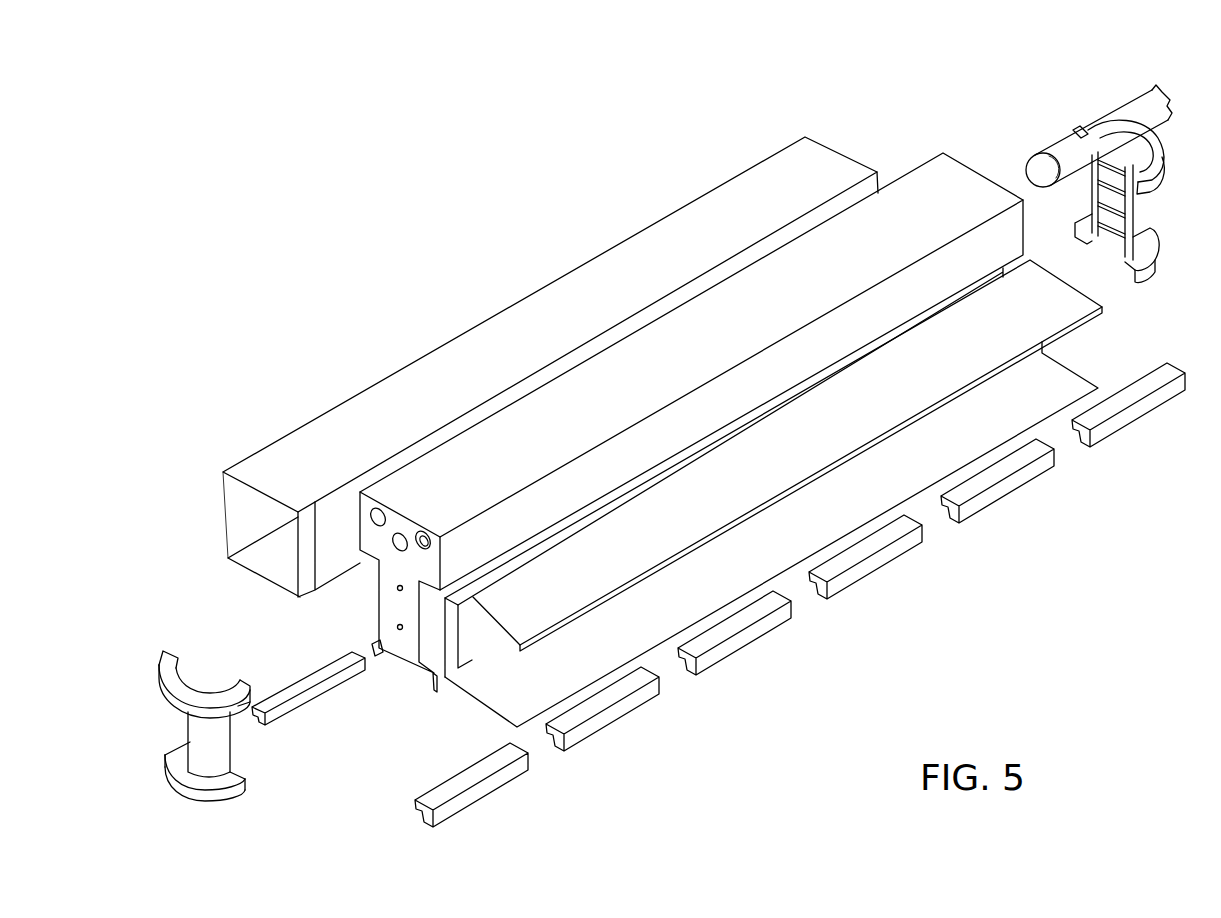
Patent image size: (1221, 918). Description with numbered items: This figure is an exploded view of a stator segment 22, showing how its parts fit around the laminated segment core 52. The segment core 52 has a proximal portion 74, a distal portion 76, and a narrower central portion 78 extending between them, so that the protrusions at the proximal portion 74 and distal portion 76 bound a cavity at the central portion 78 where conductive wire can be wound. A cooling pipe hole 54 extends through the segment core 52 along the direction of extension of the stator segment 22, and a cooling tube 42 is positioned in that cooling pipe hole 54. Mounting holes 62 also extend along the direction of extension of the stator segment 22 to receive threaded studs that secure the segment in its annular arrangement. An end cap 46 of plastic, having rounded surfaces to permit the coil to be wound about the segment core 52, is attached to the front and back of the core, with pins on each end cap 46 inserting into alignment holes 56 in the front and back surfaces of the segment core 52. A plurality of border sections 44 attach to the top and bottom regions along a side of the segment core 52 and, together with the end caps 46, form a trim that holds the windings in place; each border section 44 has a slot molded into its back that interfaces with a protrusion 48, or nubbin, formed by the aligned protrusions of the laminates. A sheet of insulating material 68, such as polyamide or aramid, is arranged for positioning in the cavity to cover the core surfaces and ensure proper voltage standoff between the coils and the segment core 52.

The stator segment 22 is at (1037, 112).
The cooling tube 42 is at (1160, 115).
The border sections 44 is at (307, 685).
The end cap 46 is at (190, 728).
The protrusion 48 is at (437, 685).
The segment core 52 is at (948, 173).
The cooling pipe hole 54 is at (400, 552).
The alignment holes 56 is at (400, 631).
The mounting holes 62 is at (418, 538).
The sheet of insulating material 68 is at (812, 158).
The proximal portion 74 is at (466, 547).
The distal portion 76 is at (378, 648).
The central portion 78 is at (392, 588).